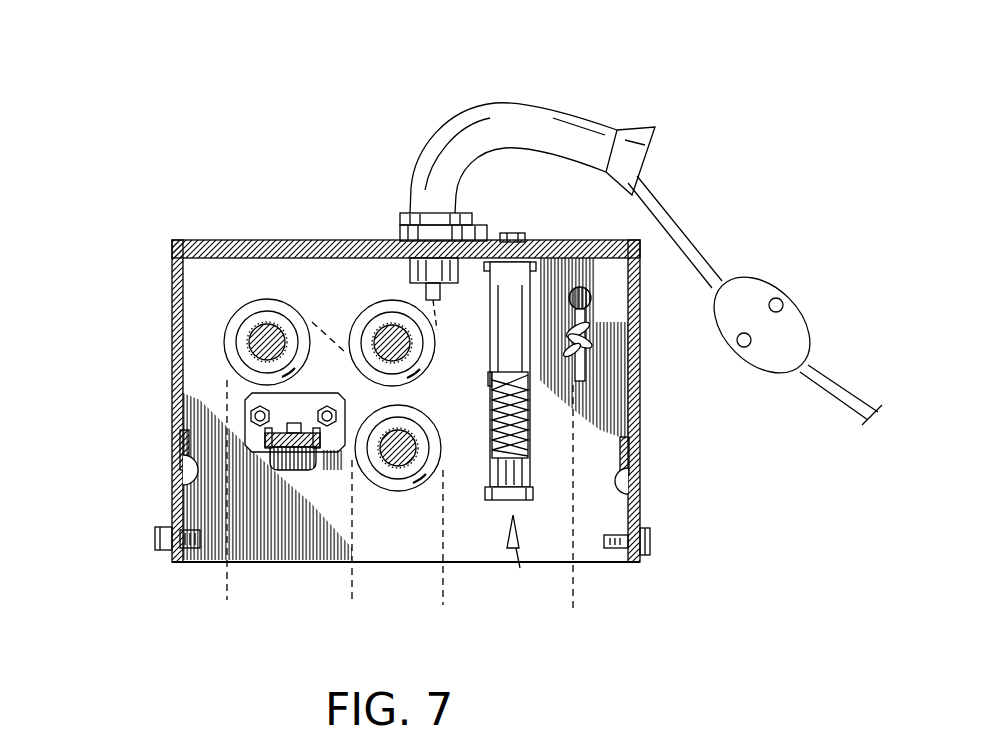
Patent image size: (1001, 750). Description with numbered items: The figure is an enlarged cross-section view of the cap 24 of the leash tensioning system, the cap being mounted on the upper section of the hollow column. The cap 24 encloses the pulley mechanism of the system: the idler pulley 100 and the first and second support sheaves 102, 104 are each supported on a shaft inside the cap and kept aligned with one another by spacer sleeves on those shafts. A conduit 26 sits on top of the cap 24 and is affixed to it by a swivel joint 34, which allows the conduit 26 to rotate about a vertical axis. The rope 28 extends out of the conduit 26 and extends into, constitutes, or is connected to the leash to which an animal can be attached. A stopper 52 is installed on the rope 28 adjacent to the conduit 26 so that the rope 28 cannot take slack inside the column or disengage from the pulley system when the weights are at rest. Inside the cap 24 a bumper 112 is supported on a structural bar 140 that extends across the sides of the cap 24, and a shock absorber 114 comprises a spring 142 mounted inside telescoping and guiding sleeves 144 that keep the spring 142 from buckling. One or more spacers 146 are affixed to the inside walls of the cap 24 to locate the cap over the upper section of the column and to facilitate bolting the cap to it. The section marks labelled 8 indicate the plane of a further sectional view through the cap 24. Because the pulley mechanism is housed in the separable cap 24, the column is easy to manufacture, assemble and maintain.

The section line of FIG. 8 is at (240, 611).
The cap 24 is at (172, 272).
The conduit 26 is at (508, 101).
The rope 28 is at (685, 225).
The swivel joint 34 is at (392, 212).
The stopper 52 is at (765, 272).
The idler pulley 100 is at (372, 302).
The first support sheave 102 is at (226, 332).
The second support sheave 104 is at (392, 492).
The bumper 112 is at (292, 472).
The shock absorber 114 is at (615, 465).
The structural bar 140 is at (246, 440).
The spring 142 is at (528, 433).
The telescoping and guiding sleeves 144 is at (528, 392).
The spacers 146 is at (192, 478).